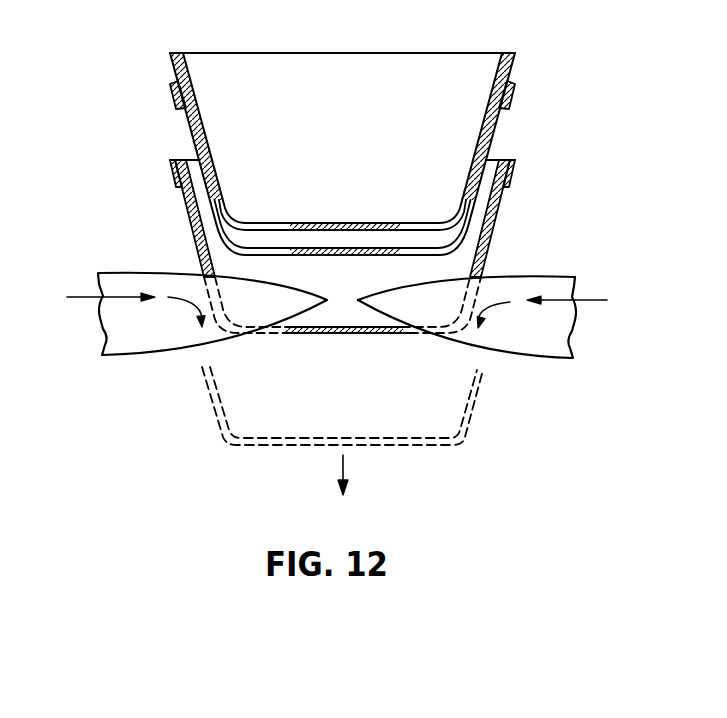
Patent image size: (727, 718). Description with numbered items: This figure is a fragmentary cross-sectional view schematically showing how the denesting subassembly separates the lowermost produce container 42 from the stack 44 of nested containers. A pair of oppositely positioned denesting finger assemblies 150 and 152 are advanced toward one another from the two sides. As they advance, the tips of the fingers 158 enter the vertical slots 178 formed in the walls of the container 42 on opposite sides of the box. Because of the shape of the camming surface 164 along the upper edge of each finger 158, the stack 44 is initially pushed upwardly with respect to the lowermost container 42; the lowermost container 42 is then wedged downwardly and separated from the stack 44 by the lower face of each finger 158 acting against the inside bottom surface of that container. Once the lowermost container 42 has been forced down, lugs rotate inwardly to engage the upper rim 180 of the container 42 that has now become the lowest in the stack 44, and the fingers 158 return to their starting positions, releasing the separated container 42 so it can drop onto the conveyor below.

The stack 44 is at (382, 146).
The produce container 42 is at (498, 207).
The upper rim 180 is at (516, 96).
The vertical slot 178 is at (205, 276).
The denesting finger assembly 150 is at (118, 252).
The denesting finger assembly 152 is at (584, 256).
The camming surface 164 is at (540, 278).
The finger 158 is at (140, 346).